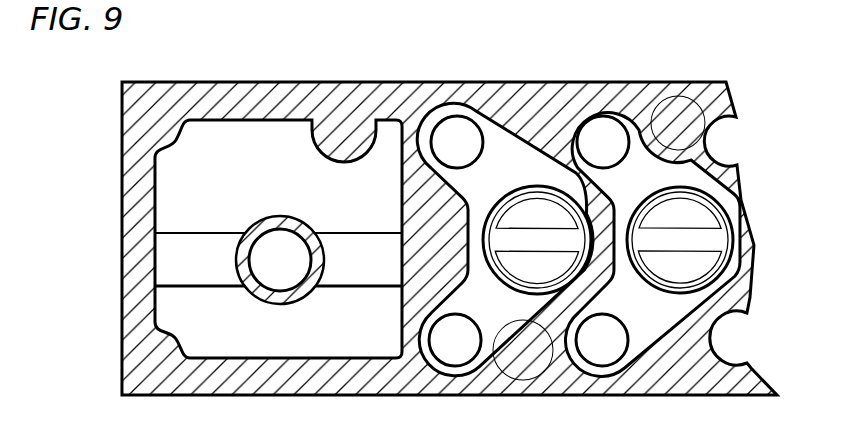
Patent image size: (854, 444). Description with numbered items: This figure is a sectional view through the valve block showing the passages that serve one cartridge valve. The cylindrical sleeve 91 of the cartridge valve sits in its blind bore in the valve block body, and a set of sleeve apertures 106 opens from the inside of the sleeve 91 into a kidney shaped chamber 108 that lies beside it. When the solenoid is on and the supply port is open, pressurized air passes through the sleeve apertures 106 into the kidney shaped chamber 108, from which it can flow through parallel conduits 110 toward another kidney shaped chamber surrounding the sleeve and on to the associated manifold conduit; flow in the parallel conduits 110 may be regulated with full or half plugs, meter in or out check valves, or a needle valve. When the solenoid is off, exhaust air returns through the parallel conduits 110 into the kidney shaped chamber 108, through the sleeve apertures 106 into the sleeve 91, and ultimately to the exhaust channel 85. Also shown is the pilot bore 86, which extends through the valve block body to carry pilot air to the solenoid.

The exhaust channel 85 is at (218, 170).
The pilot bore 86 is at (268, 238).
The cylindrical sleeve 91 is at (720, 184).
The sleeve apertures 106 is at (530, 188).
The kidney shaped chamber 108 is at (500, 143).
The parallel conduits 110 is at (443, 140).